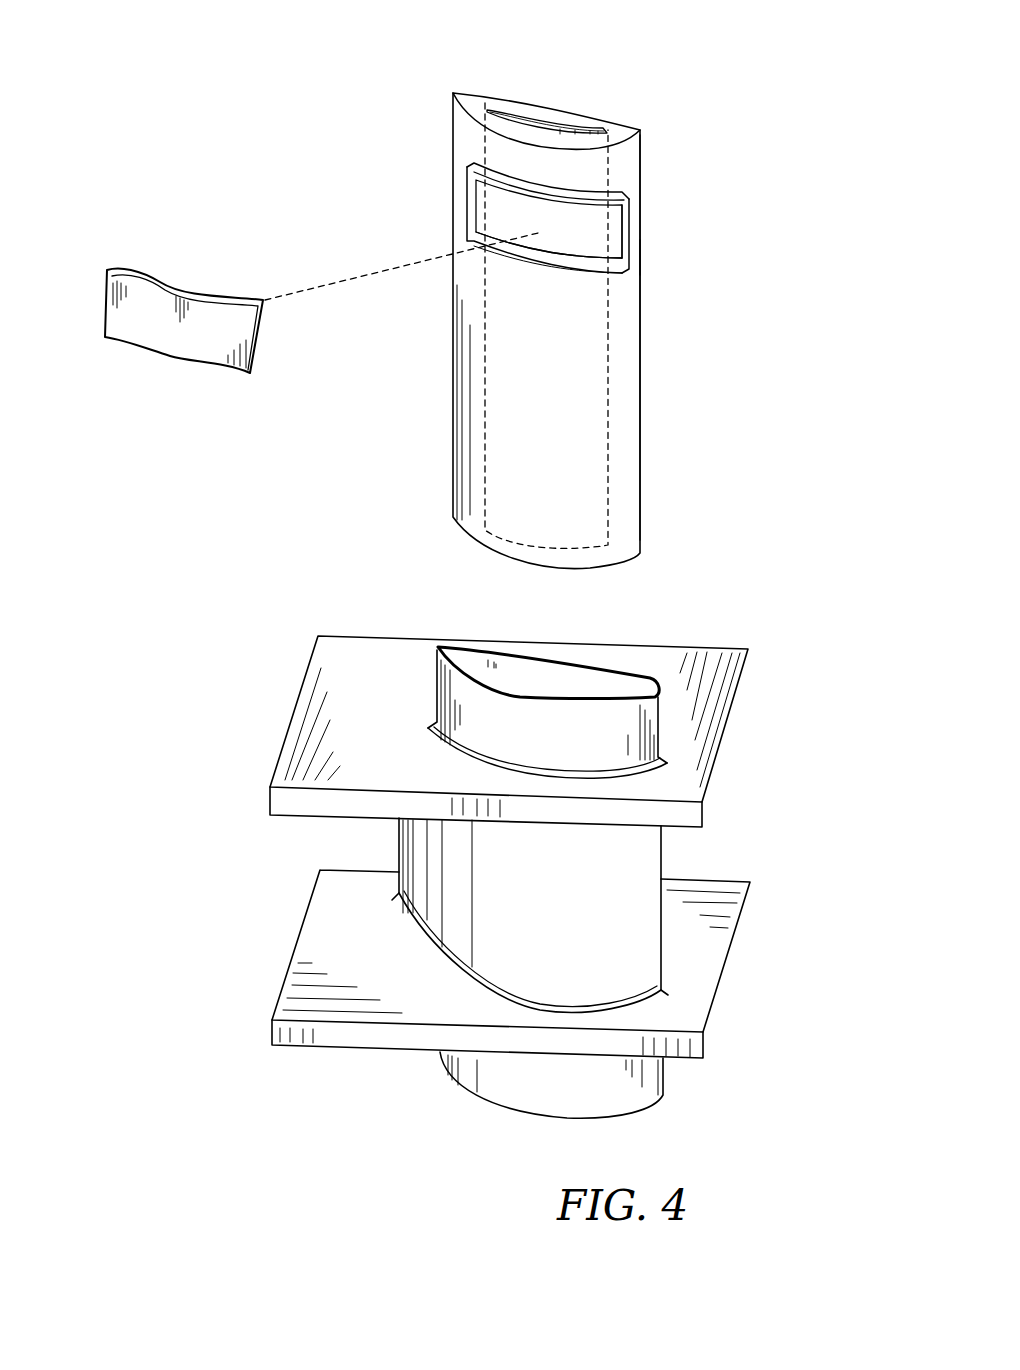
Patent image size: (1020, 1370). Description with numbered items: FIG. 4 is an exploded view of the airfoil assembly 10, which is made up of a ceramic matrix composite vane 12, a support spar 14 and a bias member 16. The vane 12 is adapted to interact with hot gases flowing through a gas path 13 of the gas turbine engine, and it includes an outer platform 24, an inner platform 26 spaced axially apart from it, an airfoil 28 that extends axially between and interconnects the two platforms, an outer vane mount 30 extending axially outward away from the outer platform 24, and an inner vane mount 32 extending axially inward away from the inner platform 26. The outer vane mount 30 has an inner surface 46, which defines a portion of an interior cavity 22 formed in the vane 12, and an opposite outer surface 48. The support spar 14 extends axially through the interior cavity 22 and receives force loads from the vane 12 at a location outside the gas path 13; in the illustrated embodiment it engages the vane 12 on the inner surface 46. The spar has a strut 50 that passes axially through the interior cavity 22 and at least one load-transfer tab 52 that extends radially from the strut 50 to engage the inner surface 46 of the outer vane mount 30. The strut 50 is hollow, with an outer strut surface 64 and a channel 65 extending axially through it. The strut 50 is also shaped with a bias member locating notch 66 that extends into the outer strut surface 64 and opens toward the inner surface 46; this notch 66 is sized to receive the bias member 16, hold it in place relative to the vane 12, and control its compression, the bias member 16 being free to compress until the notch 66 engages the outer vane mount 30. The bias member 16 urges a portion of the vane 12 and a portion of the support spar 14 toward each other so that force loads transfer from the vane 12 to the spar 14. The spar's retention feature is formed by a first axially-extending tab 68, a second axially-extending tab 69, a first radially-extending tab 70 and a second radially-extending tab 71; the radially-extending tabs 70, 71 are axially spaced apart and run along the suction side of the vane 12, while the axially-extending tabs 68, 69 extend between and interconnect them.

The airfoil assembly 10 is at (773, 140).
The vane 12 is at (758, 787).
The gas path 13 is at (338, 854).
The support spar 14 is at (438, 110).
The bias member 16 is at (97, 297).
The interior cavity 22 is at (533, 672).
The outer platform 24 is at (750, 670).
The inner platform 26 is at (728, 982).
The airfoil 28 is at (662, 865).
The outer vane mount 30 is at (628, 668).
The inner vane mount 32 is at (677, 1093).
The inner surface 46 is at (478, 672).
The outer surface 48 is at (460, 693).
The strut 50 is at (650, 257).
The load-transfer tab 52 is at (655, 152).
The outer strut surface 64 is at (622, 378).
The channel 65 is at (552, 120).
The bias member locating notch 66 is at (592, 250).
The first axially-extending tab 68 is at (467, 203).
The second axially-extending tab 69 is at (634, 224).
The first radially-extending tab 70 is at (510, 180).
The second radially-extending tab 71 is at (478, 252).